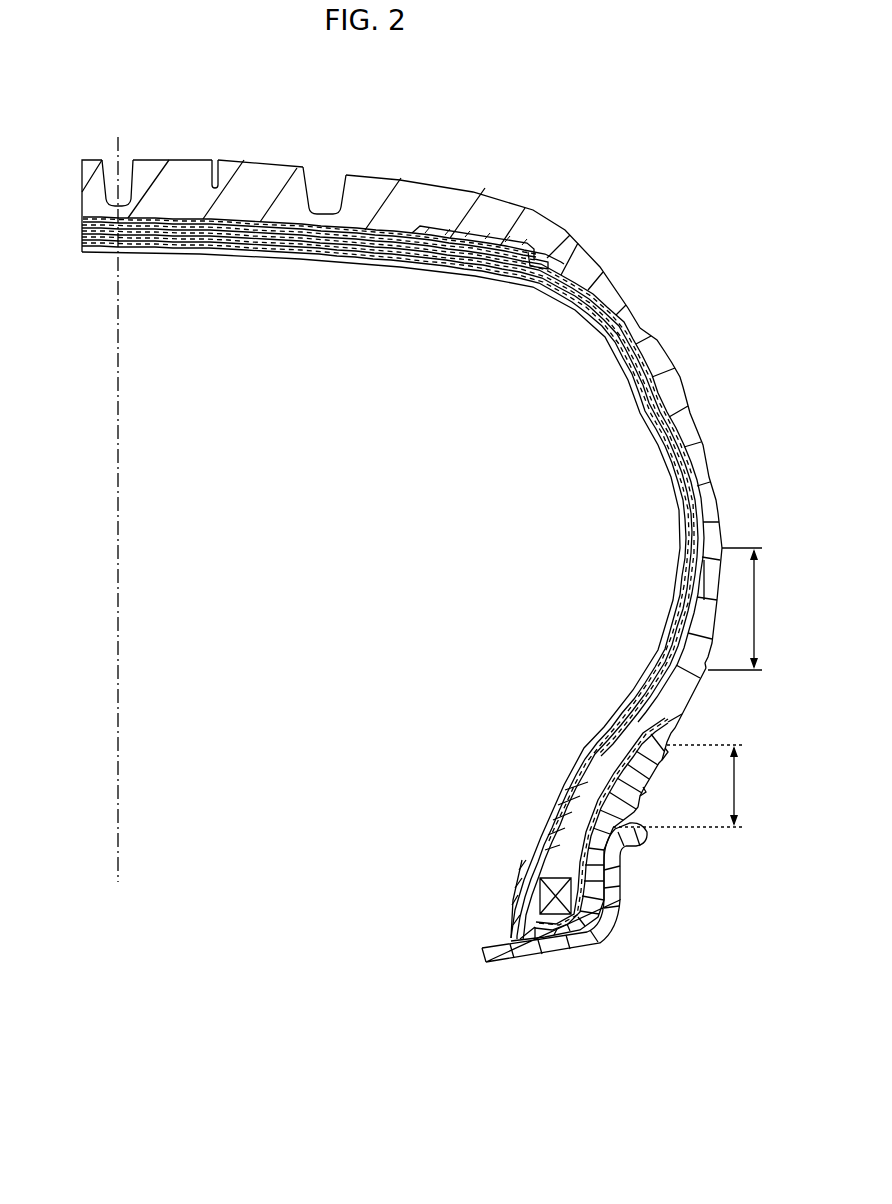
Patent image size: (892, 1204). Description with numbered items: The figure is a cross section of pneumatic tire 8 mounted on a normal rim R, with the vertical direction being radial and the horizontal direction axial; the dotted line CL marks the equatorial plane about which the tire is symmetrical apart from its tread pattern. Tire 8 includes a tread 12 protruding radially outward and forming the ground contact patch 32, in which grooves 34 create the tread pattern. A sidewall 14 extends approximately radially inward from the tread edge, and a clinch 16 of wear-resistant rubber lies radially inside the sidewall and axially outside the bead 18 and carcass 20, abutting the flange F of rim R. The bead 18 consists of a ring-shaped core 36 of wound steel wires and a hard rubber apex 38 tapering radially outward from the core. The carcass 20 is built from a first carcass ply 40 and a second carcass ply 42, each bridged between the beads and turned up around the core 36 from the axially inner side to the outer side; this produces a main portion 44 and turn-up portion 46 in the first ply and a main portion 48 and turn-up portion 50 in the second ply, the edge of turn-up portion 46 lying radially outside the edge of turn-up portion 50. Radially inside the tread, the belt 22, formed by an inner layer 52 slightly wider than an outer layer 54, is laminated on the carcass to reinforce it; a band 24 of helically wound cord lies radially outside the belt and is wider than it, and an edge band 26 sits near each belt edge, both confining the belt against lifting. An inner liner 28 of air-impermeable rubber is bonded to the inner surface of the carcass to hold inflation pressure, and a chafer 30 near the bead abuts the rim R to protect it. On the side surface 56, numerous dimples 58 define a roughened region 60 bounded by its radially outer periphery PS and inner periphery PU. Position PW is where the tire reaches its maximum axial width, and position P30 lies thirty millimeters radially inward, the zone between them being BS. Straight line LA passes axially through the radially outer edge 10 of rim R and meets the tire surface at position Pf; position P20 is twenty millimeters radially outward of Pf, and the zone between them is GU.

The pneumatic tire 8 is at (606, 132).
The radially outer edge of rim 10 is at (647, 833).
The tread 12 is at (263, 162).
The sidewall 14 is at (707, 431).
The clinch 16 is at (618, 787).
The bead 18 is at (452, 843).
The carcass 20 is at (282, 313).
The belt 22 is at (328, 322).
The band 24 is at (365, 230).
The edge band 26 is at (470, 240).
The inner liner 28 is at (148, 255).
The chafer 30 is at (510, 918).
The contact patch 32 is at (177, 160).
The groove 34 is at (106, 162).
The core 36 is at (540, 898).
The apex 38 is at (548, 852).
The first carcass ply 40 is at (227, 245).
The second carcass ply 42 is at (268, 245).
The main portion of first carcass ply 44 is at (700, 543).
The turn-up portion of first carcass ply 46 is at (698, 478).
The main portion of second carcass ply 48 is at (700, 598).
The turn-up portion of second carcass ply 50 is at (704, 583).
The inner layer of belt 52 is at (334, 250).
The outer layer of belt 54 is at (372, 250).
The side surface 56 is at (727, 636).
The dimple 58 is at (664, 756).
The roughened region 60 is at (702, 789).
The equatorial plane CL is at (122, 650).
The maximum-width position PW is at (724, 547).
The zone from PW to P30 BS is at (767, 609).
The position P30 is at (712, 672).
The outer periphery of roughened region PS is at (674, 730).
The position P20 is at (668, 745).
The zone from Pf to P20 GU is at (751, 786).
The inner periphery of roughened region PU is at (642, 818).
The position Pf is at (614, 832).
The straight line LA is at (733, 830).
The flange F is at (600, 892).
The rim R is at (537, 955).